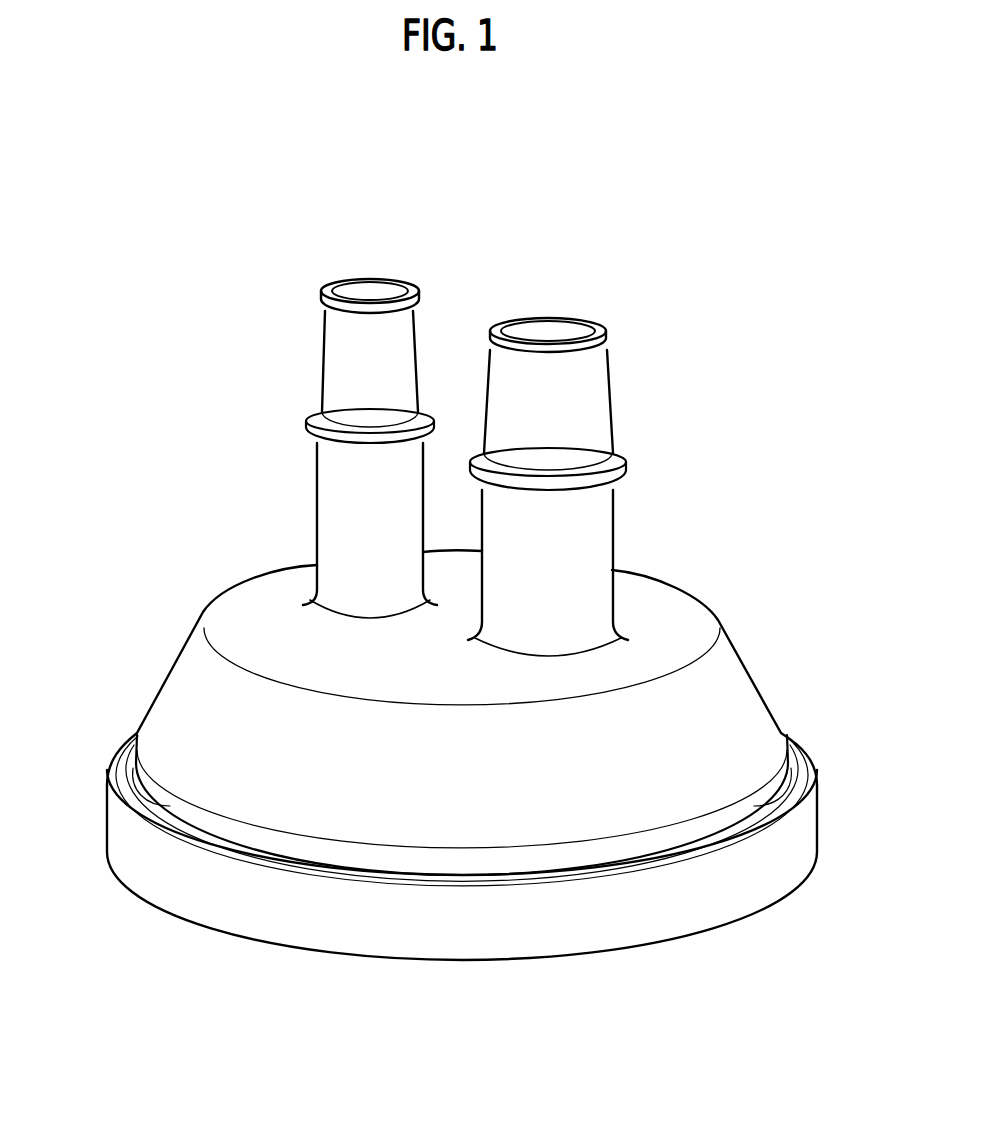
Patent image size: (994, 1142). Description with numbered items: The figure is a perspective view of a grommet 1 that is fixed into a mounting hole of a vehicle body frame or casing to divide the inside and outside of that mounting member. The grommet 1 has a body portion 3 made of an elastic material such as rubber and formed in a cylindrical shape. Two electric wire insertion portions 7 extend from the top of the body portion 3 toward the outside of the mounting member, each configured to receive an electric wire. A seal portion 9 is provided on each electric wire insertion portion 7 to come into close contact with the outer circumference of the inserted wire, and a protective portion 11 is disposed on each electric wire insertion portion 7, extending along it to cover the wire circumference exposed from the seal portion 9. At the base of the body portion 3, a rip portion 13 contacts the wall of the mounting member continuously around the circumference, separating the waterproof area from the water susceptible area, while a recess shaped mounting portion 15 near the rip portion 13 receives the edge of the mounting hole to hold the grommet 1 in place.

The grommet 1 is at (491, 259).
The body portion 3 is at (758, 677).
The electric wire insertion portion 7 is at (318, 497).
The seal portion 9 is at (305, 431).
The protective portion 11 is at (321, 354).
The rip portion 13 is at (797, 838).
The mounting portion 15 is at (168, 804).